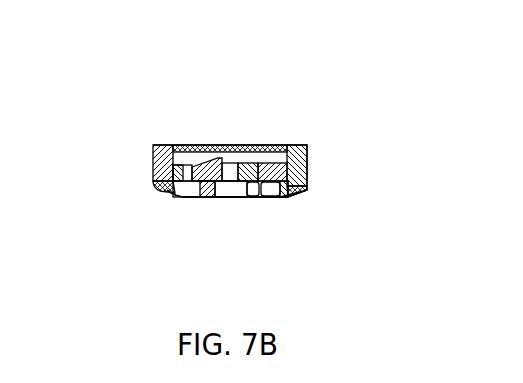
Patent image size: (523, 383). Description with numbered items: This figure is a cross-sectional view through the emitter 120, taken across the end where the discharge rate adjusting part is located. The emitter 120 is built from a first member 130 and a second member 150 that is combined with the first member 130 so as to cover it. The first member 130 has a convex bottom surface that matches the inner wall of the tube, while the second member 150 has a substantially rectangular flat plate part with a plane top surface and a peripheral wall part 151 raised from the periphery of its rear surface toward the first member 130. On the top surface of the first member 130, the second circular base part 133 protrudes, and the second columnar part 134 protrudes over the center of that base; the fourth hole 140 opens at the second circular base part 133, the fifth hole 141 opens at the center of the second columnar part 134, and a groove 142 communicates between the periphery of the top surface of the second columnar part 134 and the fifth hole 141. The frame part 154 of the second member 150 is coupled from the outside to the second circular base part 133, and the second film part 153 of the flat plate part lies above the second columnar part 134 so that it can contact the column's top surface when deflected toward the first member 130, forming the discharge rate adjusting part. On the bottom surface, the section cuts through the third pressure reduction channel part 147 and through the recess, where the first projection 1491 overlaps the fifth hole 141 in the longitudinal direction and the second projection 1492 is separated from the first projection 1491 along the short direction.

The emitter 120 is at (368, 86).
The first member 130 is at (153, 187).
The second circular base part 133 is at (272, 163).
The second columnar part 134 is at (252, 163).
The fourth hole 140 is at (178, 145).
The fifth hole 141 is at (228, 162).
The groove 142 is at (235, 162).
The third pressure reduction channel part 147 is at (189, 198).
The first projection 1491 is at (229, 198).
The second projection 1492 is at (275, 197).
The second member 150 is at (153, 157).
The peripheral wall part 151 is at (305, 187).
The second film part 153 is at (203, 147).
The frame part 154 is at (165, 190).